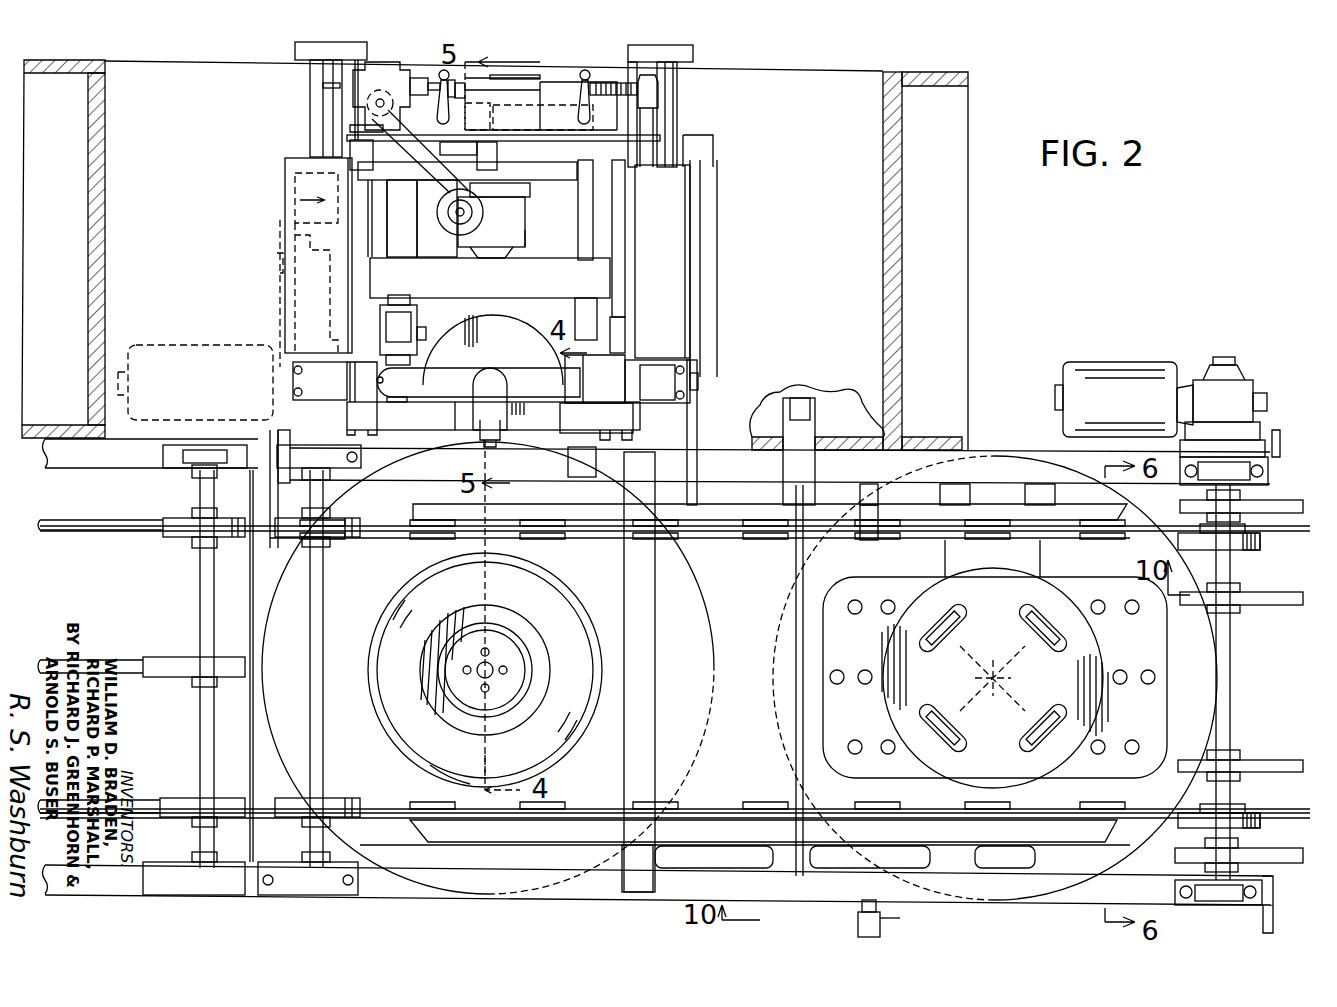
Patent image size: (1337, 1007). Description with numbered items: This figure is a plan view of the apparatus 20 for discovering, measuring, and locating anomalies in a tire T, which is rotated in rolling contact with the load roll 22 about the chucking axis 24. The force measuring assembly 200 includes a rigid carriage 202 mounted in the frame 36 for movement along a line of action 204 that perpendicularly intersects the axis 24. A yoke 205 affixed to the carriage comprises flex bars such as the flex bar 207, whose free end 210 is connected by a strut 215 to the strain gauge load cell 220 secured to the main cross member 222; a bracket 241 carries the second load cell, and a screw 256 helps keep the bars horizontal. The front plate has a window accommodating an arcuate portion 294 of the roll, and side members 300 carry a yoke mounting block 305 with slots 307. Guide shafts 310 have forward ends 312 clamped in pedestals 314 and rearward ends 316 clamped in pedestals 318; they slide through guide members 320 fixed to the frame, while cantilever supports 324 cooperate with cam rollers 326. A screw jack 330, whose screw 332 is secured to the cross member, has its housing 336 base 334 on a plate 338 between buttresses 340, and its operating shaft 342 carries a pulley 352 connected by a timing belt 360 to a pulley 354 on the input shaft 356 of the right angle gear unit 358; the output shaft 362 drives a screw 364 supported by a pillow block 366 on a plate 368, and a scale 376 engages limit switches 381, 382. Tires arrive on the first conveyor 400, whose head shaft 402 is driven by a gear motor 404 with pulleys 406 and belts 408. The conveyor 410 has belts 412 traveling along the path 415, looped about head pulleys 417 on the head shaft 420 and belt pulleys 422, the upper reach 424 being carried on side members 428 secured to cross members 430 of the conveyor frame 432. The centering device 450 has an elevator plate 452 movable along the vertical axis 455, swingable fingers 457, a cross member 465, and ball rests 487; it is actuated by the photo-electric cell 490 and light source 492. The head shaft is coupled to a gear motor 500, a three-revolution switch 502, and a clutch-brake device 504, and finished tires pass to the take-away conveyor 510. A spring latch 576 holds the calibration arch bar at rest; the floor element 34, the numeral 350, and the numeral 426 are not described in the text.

The apparatus 20 is at (1119, 268).
The load roll 22 is at (582, 462).
The chucking axis 24 is at (492, 662).
The floor 34 is at (854, 440).
The frame 36 is at (981, 321).
The tire T is at (725, 652).
The force measuring assembly 200 is at (602, 288).
The carriage 202 is at (622, 240).
The line of action 204 is at (455, 545).
The yoke 205 is at (533, 340).
The flex bar 207 is at (622, 360).
The free end of flex bar 210 is at (420, 374).
The strut 215 is at (420, 405).
The strain gauge load cell 220 is at (415, 300).
The main cross member 222 is at (506, 300).
The bracket 241 is at (480, 415).
The screw 256 is at (335, 382).
The arcuate portion of load roll 294 is at (495, 455).
The side member 300 is at (713, 150).
The yoke mounting block 305 is at (623, 365).
The slots 307 is at (618, 385).
The guide shafts 310 is at (320, 95).
The forward ends of guide shafts 312 is at (300, 405).
The pedestals 314 is at (294, 372).
The rearward ends of guide shafts 316 is at (310, 66).
The pedestals 318 is at (295, 52).
The guide members 320 is at (285, 170).
The cantilever support 324 is at (278, 437).
The cam rollers 326 is at (698, 385).
The screw jack 330 is at (535, 244).
The screw 332 is at (500, 258).
The base of jack housing 334 is at (515, 192).
The jack housing 336 is at (484, 243).
The plate 338 is at (513, 175).
The buttresses 340 is at (398, 208).
The operating shaft 342 is at (448, 220).
The rod 350 is at (350, 148).
The pulley 352 is at (455, 235).
The pulley 354 is at (367, 108).
The input shaft 356 is at (363, 129).
The right angle gear unit 358 is at (378, 66).
The timing belt 360 is at (403, 160).
The output shaft 362 is at (380, 97).
The screw 364 is at (605, 83).
The pillow block 366 is at (658, 92).
The plate 368 is at (660, 138).
The scale 376 is at (560, 78).
The limit switch 381 is at (468, 155).
The limit switch 382 is at (529, 115).
The first conveyor 400 is at (1290, 605).
The head shaft 402 is at (1233, 586).
The gear motor 404 is at (1204, 358).
The conveyor belt pulleys 406 is at (1240, 515).
The conveyor belts 408 is at (1272, 762).
The conveyor 410 is at (723, 794).
The conveyor belts 412 is at (738, 540).
The path 415 is at (282, 673).
The head pulleys 417 is at (345, 522).
The head shaft 420 is at (316, 746).
The belt pulleys 422 is at (1245, 548).
The upper reach 424 is at (778, 545).
The chain lug 426 is at (522, 540).
The side members 428 is at (575, 845).
The cross members 430 is at (635, 880).
The conveyor frame 432 is at (422, 885).
The centering device 450 is at (895, 653).
The elevator plate 452 is at (1109, 650).
The vertical axis 455 is at (1020, 676).
The fingers 457 is at (968, 660).
The cross member 465 is at (945, 565).
The ball rests 487 is at (872, 688).
The photo-electric cell 490 is at (812, 408).
The light source 492 is at (880, 918).
The gear motor 500 is at (118, 388).
The three-revolution switch 502 is at (291, 204).
The clutch-brake device 504 is at (305, 273).
The take-away conveyor 510 is at (180, 563).
The spring latch 576 is at (470, 440).